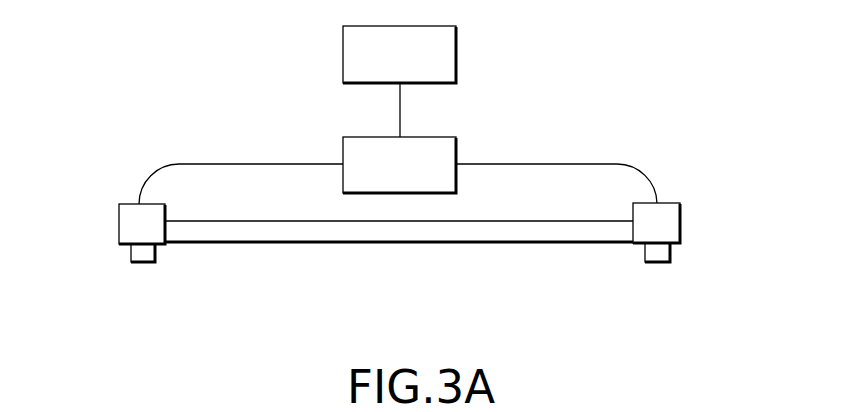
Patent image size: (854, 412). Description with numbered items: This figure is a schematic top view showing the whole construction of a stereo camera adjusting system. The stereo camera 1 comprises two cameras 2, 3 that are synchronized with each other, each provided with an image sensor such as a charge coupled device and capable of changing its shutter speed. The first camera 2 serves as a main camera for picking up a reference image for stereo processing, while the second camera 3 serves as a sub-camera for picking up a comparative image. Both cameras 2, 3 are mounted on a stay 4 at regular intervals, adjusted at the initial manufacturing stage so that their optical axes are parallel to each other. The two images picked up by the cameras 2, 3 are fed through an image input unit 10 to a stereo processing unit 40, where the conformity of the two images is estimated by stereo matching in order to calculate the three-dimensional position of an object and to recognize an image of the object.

The stereo camera 1 is at (322, 289).
The first camera 2 is at (119, 226).
The second camera 3 is at (680, 225).
The stay 4 is at (405, 245).
The image input unit 10 is at (456, 143).
The stereo processing unit 40 is at (456, 52).